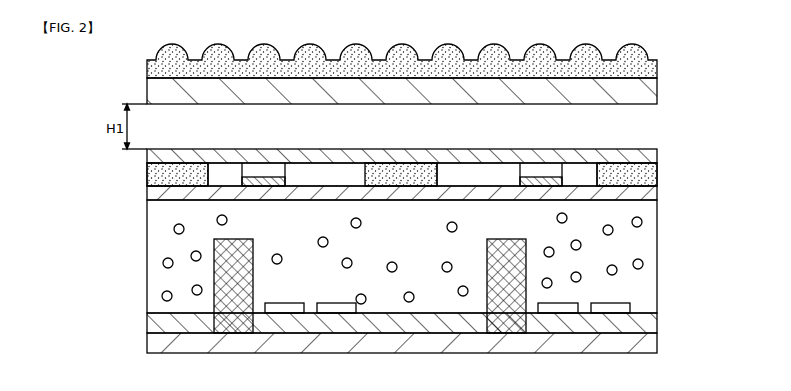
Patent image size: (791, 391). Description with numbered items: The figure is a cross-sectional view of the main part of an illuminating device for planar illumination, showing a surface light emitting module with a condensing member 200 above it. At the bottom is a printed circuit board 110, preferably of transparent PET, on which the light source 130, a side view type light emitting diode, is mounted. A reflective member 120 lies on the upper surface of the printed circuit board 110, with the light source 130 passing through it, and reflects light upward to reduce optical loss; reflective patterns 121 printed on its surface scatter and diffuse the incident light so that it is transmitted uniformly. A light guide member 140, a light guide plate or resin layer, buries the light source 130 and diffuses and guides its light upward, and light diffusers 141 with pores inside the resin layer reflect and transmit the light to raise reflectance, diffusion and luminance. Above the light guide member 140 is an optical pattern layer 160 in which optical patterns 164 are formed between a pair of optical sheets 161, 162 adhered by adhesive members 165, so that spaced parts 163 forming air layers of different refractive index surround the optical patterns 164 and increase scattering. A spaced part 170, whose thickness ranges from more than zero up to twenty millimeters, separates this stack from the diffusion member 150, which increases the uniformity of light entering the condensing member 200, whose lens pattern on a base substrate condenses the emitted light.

The printed circuit board 110 is at (650, 343).
The reflective member 120 is at (650, 325).
The reflective patterns 121 is at (607, 303).
The light source 130 is at (214, 276).
The light guide member 140 is at (413, 266).
The light diffusers 141 is at (174, 230).
The diffusion member 150 is at (652, 98).
The optical pattern layer 160 is at (427, 177).
The optical sheet 161 is at (657, 153).
The optical sheet 162 is at (640, 208).
The spaced parts 163 is at (380, 182).
The optical patterns 164 is at (247, 180).
The adhesive members 165 is at (150, 166).
The spaced part 170 is at (645, 128).
The condensing member 200 is at (657, 62).